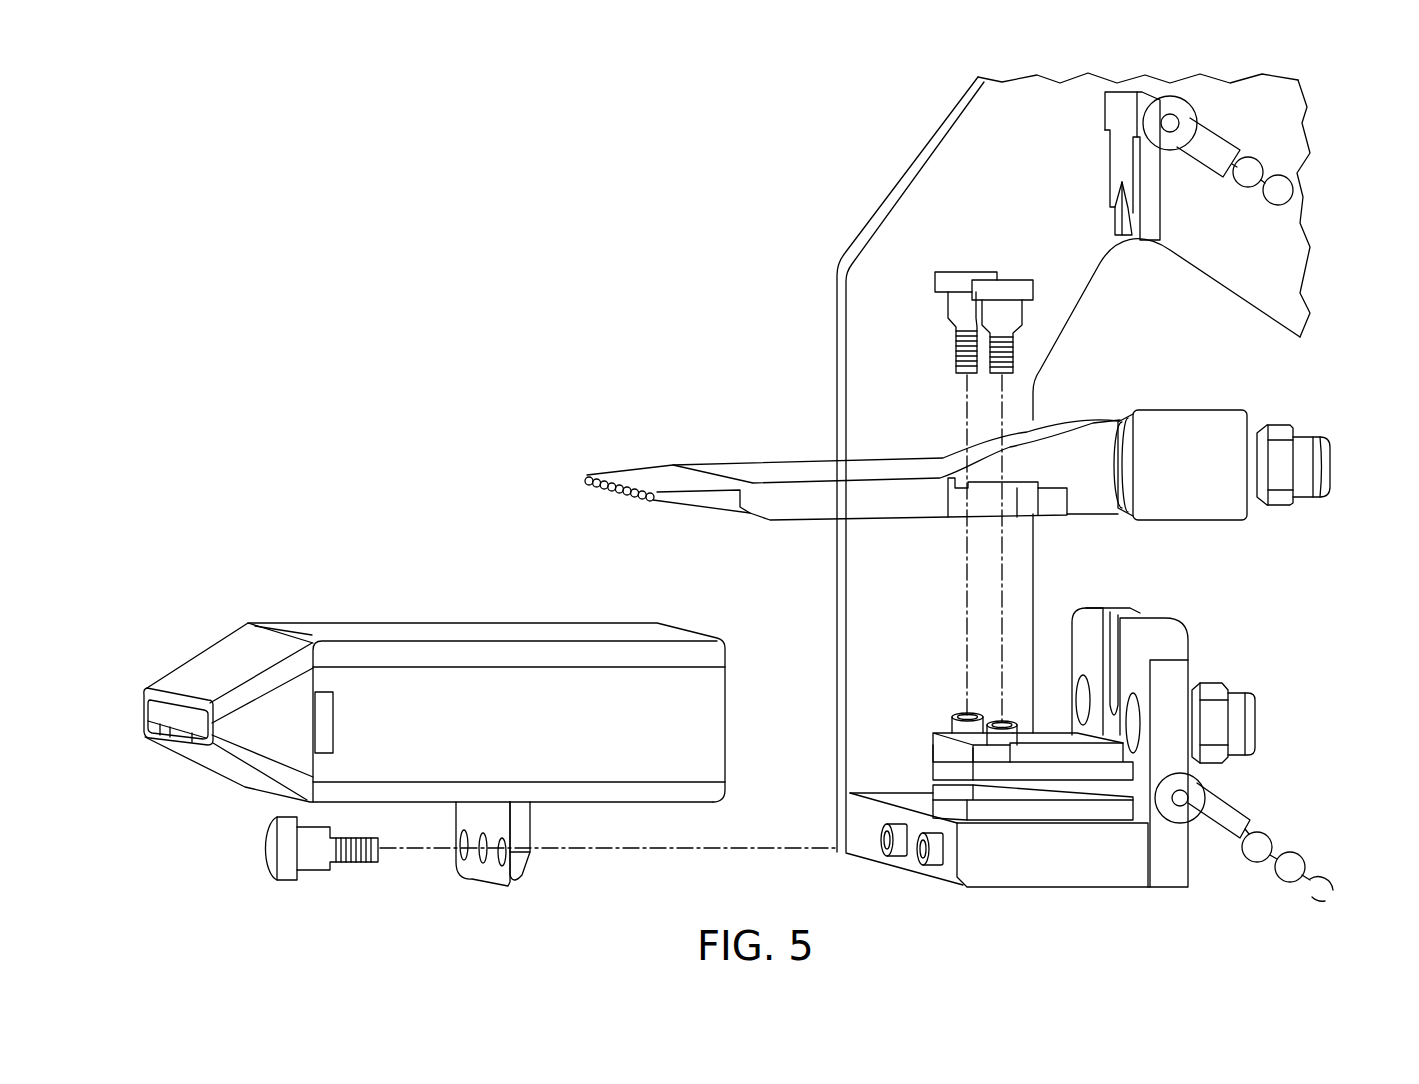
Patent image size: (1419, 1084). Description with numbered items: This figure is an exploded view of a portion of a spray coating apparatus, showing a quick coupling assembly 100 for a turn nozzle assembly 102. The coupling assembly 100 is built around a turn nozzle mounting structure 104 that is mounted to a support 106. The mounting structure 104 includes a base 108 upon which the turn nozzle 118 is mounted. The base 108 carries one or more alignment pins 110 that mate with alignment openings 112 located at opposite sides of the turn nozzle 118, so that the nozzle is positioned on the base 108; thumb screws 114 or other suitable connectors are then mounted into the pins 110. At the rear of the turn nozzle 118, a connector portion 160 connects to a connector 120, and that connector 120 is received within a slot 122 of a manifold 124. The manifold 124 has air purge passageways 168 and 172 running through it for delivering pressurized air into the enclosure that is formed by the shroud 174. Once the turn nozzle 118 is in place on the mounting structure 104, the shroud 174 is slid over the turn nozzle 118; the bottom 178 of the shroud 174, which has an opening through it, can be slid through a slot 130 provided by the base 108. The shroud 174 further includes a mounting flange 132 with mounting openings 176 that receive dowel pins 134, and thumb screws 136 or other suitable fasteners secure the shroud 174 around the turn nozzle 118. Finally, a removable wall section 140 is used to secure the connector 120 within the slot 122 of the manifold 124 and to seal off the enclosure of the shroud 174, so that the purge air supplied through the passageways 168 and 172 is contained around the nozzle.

The quick coupling assembly 100 is at (1119, 719).
The turn nozzle assembly 102 is at (893, 439).
The turn nozzle mounting structure 104 is at (1046, 462).
The support 106 is at (997, 859).
The base 108 is at (1033, 795).
The alignment pins 110 is at (949, 744).
The alignment openings 112 is at (998, 519).
The thumb screws 114 is at (984, 470).
The turn nozzle 118 is at (852, 437).
The connector 120 is at (1252, 411).
The slot 122 is at (1168, 641).
The manifold 124 is at (1208, 747).
The slot 130 is at (1033, 821).
The mounting flange 132 is at (503, 852).
The dowel pins 134 is at (898, 860).
The thumb screws 136 is at (282, 848).
The removable wall section 140 is at (1199, 140).
The connector portion 160 is at (1168, 419).
The air purge passageway 168 is at (1078, 708).
The air purge passageway 172 is at (1234, 824).
The shroud 174 is at (434, 716).
The mounting openings 176 is at (459, 860).
The bottom 178 is at (429, 822).